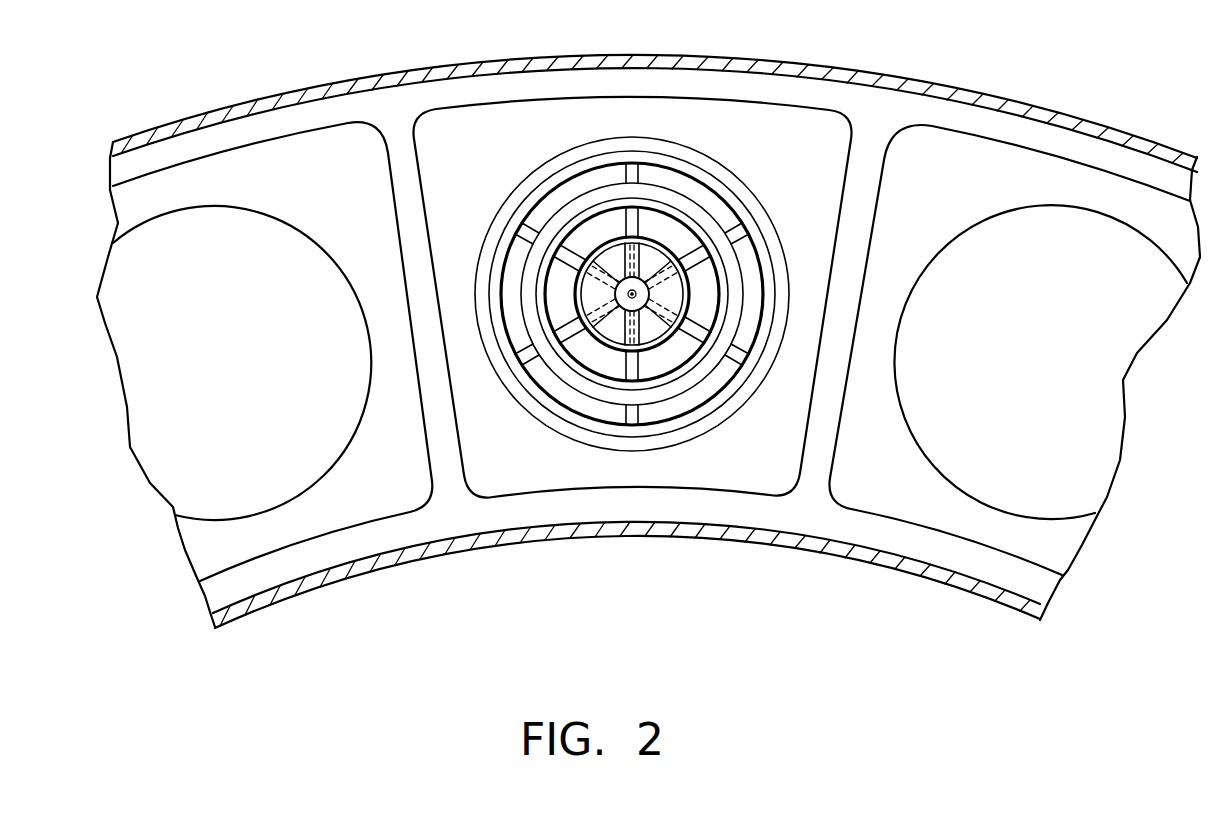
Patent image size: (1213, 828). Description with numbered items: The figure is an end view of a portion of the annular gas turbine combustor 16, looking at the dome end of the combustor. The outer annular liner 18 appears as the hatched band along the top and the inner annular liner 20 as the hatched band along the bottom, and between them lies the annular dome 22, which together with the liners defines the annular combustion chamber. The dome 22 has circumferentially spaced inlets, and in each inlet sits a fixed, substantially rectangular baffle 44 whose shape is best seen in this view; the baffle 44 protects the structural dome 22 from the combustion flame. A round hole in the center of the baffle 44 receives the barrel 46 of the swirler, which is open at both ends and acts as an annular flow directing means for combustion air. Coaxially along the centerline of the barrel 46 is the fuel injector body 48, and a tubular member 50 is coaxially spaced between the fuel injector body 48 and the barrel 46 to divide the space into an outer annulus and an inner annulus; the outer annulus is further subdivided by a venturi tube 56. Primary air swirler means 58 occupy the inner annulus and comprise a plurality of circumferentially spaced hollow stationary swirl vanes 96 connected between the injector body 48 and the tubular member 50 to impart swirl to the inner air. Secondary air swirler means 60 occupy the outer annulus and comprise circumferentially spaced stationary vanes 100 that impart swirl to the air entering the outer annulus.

The gas turbine combustor 16 is at (878, 60).
The outer annular liner 18 is at (257, 100).
The inner annular liner 20 is at (452, 556).
The annular dome 22 is at (390, 100).
The baffle 44 is at (486, 153).
The barrel 46 is at (580, 424).
The fuel injector body 48 is at (648, 281).
The tubular member 50 is at (670, 234).
The venturi tube 56 is at (670, 181).
The primary air swirler means 58 is at (648, 333).
The secondary air swirler means 60 is at (589, 178).
The swirl vanes 96 is at (648, 290).
The stationary vanes 100 is at (630, 224).